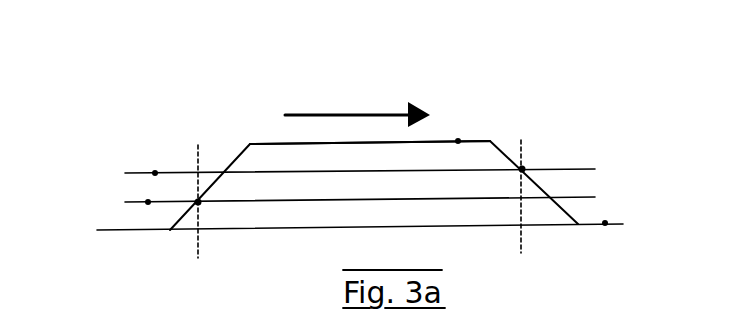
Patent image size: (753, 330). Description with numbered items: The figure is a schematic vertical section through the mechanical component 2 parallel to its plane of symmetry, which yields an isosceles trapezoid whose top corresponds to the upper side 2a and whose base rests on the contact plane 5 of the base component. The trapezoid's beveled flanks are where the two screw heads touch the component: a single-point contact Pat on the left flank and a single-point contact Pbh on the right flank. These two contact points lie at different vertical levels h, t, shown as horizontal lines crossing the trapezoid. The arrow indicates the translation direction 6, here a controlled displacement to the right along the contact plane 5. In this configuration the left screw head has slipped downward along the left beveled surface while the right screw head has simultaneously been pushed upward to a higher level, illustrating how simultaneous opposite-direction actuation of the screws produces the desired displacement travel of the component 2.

The mechanical component 2 is at (257, 163).
The upper side 2a is at (458, 141).
The contact plane 5 is at (605, 223).
The translation direction 6 is at (331, 115).
The vertical level h is at (155, 173).
The vertical level t is at (148, 202).
The single-point contact Pat is at (205, 207).
The single-point contact Pbh is at (522, 169).